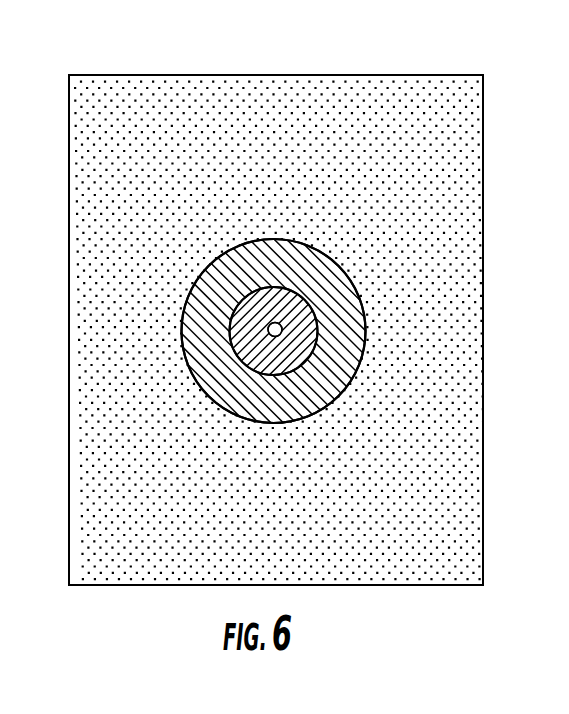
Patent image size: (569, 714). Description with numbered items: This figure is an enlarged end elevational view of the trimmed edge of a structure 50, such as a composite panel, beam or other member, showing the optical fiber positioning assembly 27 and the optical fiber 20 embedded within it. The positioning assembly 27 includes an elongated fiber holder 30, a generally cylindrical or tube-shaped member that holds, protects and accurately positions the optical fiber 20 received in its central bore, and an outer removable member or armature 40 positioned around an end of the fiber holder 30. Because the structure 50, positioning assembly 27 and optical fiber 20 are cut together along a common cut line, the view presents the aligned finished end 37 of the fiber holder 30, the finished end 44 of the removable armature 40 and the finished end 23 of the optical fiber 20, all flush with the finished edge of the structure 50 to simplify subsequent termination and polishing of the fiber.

The structure 50 is at (337, 86).
The optical fiber positioning assembly 27 is at (367, 263).
The finished end of removable armature 44 is at (266, 267).
The outer removable member or armature 40 is at (347, 338).
The fiber holder 30 is at (302, 350).
The finished end of fiber holder 37 is at (250, 311).
The finished end of optical fiber 23 is at (268, 332).
The optical fiber 20 is at (272, 337).